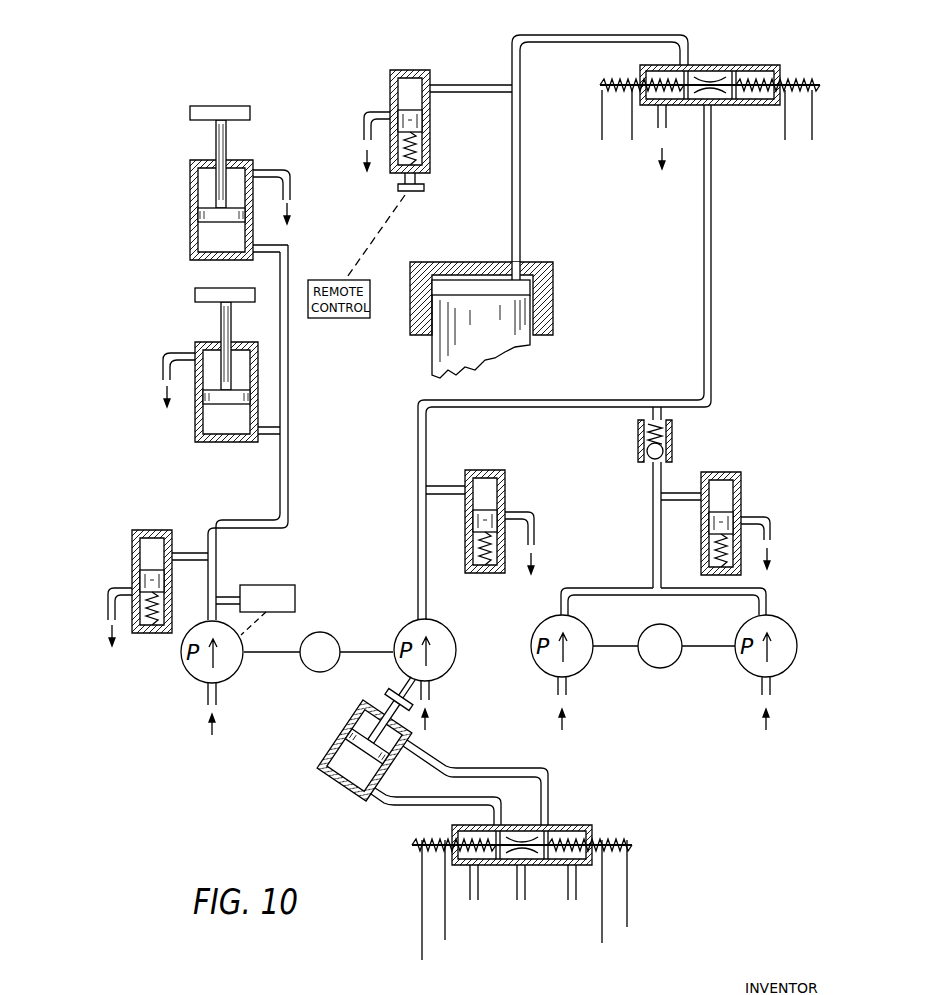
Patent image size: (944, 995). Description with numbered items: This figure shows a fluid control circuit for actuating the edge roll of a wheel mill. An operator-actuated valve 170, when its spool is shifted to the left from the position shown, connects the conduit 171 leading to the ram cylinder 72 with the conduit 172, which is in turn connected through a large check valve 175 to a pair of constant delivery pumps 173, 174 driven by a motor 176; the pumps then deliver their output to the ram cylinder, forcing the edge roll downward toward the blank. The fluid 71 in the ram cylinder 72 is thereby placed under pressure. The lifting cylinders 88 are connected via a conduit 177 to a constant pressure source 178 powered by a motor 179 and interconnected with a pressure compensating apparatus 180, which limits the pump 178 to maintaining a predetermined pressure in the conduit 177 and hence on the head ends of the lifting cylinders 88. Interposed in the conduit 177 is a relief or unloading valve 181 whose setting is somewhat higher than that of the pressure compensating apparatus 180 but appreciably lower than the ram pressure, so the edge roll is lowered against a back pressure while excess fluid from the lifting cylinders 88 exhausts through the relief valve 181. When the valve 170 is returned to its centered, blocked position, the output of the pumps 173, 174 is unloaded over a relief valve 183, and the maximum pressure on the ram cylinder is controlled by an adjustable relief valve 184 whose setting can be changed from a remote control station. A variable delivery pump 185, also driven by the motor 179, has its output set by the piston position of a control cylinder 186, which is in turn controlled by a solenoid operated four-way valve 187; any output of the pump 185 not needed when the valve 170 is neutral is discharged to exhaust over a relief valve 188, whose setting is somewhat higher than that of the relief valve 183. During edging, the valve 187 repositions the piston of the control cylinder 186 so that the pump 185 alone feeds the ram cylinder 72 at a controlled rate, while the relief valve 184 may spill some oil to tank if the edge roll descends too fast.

The fluid in reservoir 71 is at (513, 328).
The ram cylinder 72 is at (547, 288).
The lifting cylinders 88 is at (191, 228).
The valve 170 is at (752, 65).
The conduit 171 is at (598, 47).
The conduit 172 is at (713, 238).
The constant delivery pump 173 is at (548, 672).
The constant delivery pump 174 is at (779, 621).
The check valve 175 is at (637, 450).
The motor 176 is at (669, 660).
The conduit 177 is at (288, 472).
The constant pressure source 178 is at (196, 675).
The motor 179 is at (318, 633).
The pressure compensating apparatus 180 is at (288, 586).
The relief or unloading valve 181 is at (132, 558).
The relief valve 183 is at (741, 484).
The adjustable relief valve 184 is at (390, 93).
The variable delivery pump 185 is at (412, 630).
The control cylinder 186 is at (333, 770).
The four-way valve 187 is at (575, 825).
The relief valve 188 is at (500, 472).